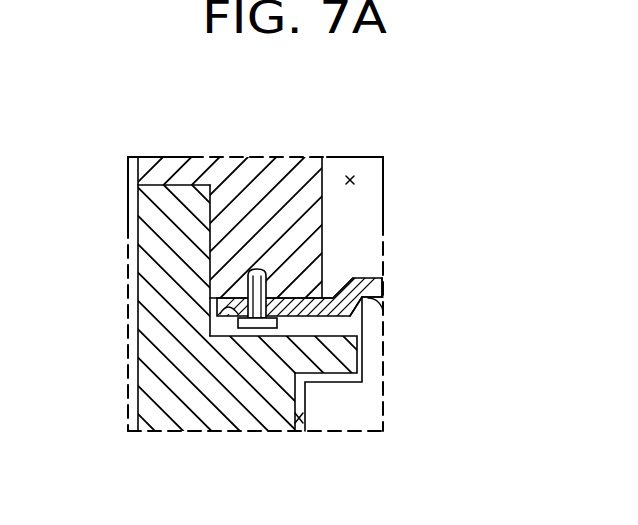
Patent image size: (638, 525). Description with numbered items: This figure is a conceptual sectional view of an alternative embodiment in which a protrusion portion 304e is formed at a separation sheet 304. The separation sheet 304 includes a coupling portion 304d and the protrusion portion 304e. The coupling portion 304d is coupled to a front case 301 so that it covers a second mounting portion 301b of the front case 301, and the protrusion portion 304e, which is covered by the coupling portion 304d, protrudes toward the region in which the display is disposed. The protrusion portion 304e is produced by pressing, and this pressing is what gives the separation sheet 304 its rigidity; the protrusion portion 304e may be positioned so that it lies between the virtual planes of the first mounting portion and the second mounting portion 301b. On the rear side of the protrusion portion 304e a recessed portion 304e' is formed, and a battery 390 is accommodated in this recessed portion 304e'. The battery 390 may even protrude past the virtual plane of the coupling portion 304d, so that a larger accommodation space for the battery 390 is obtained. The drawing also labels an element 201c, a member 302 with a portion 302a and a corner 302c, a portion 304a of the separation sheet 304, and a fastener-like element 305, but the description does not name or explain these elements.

The housing portion 201c is at (350, 178).
The front case 301 is at (165, 170).
The second mounting portion 301b is at (208, 185).
The second frame member 302 is at (165, 274).
The step portion of second frame member 302a is at (343, 356).
The corner of second frame member 302c is at (297, 424).
The separation sheet 304 is at (482, 197).
The fixing portion of elastic member 304a is at (266, 298).
The coupling portion 304d is at (296, 298).
The protrusion portion 304e is at (420, 283).
The recessed portion 304e' is at (426, 313).
The fastening screw 305 is at (254, 268).
The battery 390 is at (340, 403).